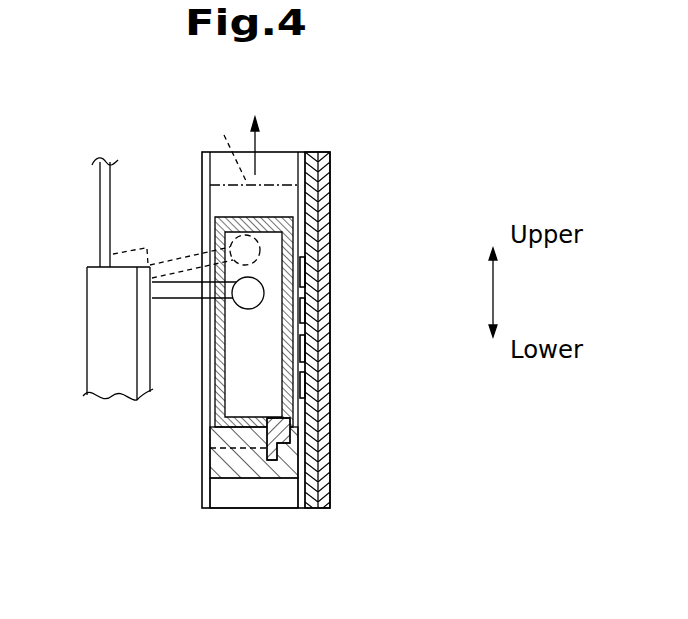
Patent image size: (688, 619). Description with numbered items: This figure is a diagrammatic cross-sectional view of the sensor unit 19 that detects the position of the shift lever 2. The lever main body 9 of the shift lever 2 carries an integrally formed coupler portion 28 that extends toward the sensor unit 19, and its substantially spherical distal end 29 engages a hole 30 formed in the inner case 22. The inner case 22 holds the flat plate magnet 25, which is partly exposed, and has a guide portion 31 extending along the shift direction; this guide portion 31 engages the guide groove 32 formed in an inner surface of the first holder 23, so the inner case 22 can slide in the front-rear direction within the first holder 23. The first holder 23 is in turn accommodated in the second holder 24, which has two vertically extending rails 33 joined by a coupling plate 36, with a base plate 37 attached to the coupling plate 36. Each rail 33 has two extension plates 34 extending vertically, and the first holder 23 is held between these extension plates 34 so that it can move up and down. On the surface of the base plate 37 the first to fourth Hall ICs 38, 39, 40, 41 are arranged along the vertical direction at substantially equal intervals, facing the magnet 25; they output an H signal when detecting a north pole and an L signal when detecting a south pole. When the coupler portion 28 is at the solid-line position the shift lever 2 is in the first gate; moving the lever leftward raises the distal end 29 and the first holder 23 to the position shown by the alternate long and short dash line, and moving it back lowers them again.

The shift lever 2 is at (92, 191).
The lever main body 9 is at (100, 246).
The sensor unit 19 is at (357, 122).
The inner case 22 is at (209, 415).
The first holder 23 is at (230, 207).
The second holder 24 is at (198, 154).
The magnet 25 is at (296, 415).
The coupler portion 28 is at (181, 275).
The distal end 29 is at (248, 298).
The hole 30 is at (210, 288).
The guide portion 31 is at (270, 466).
The guide groove 32 is at (255, 465).
The rail 33 is at (298, 160).
The extension plate 34 is at (302, 500).
The coupling plate 36 is at (330, 212).
The base plate 37 is at (322, 178).
The first Hall IC 38 is at (306, 273).
The second Hall IC 39 is at (305, 320).
The third Hall IC 40 is at (305, 347).
The fourth Hall IC 41 is at (305, 387).